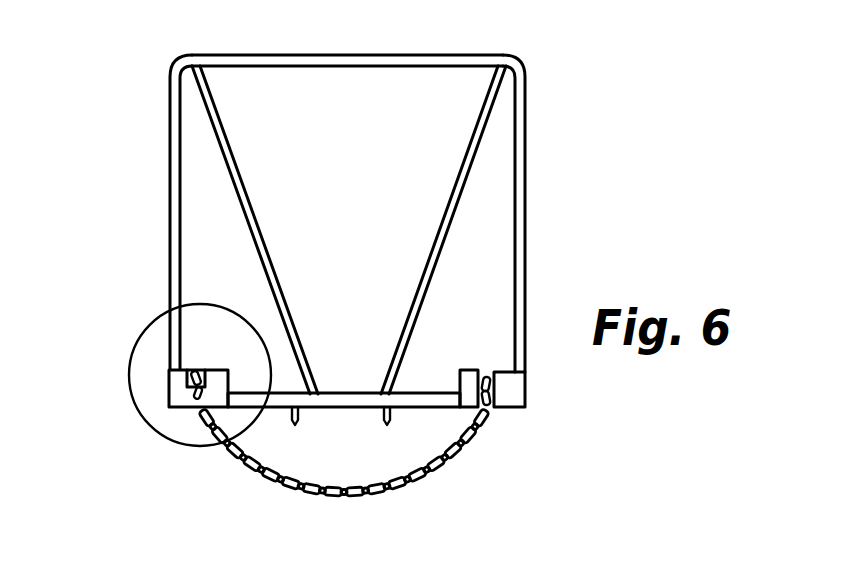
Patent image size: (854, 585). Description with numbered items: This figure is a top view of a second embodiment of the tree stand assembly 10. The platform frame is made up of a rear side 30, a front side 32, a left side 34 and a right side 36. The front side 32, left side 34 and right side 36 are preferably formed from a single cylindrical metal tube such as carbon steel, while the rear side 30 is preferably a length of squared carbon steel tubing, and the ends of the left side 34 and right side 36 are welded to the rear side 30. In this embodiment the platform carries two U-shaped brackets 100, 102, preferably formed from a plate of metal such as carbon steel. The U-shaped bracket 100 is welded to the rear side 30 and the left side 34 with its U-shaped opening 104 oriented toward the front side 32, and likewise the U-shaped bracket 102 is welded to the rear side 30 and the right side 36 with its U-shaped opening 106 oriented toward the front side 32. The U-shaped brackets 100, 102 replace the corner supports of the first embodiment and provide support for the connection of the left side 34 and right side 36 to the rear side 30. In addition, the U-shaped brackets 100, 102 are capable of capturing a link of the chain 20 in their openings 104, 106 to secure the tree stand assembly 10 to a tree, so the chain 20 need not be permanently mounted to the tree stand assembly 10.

The tree stand assembly 10 is at (168, 150).
The chain 20 is at (305, 491).
The rear side 30 is at (333, 409).
The front side 32 is at (342, 54).
The left side 34 is at (170, 268).
The right side 36 is at (526, 218).
The U-shaped bracket 100 is at (195, 368).
The U-shaped bracket 102 is at (482, 376).
The U-shaped opening 104 is at (192, 381).
The U-shaped opening 106 is at (526, 380).